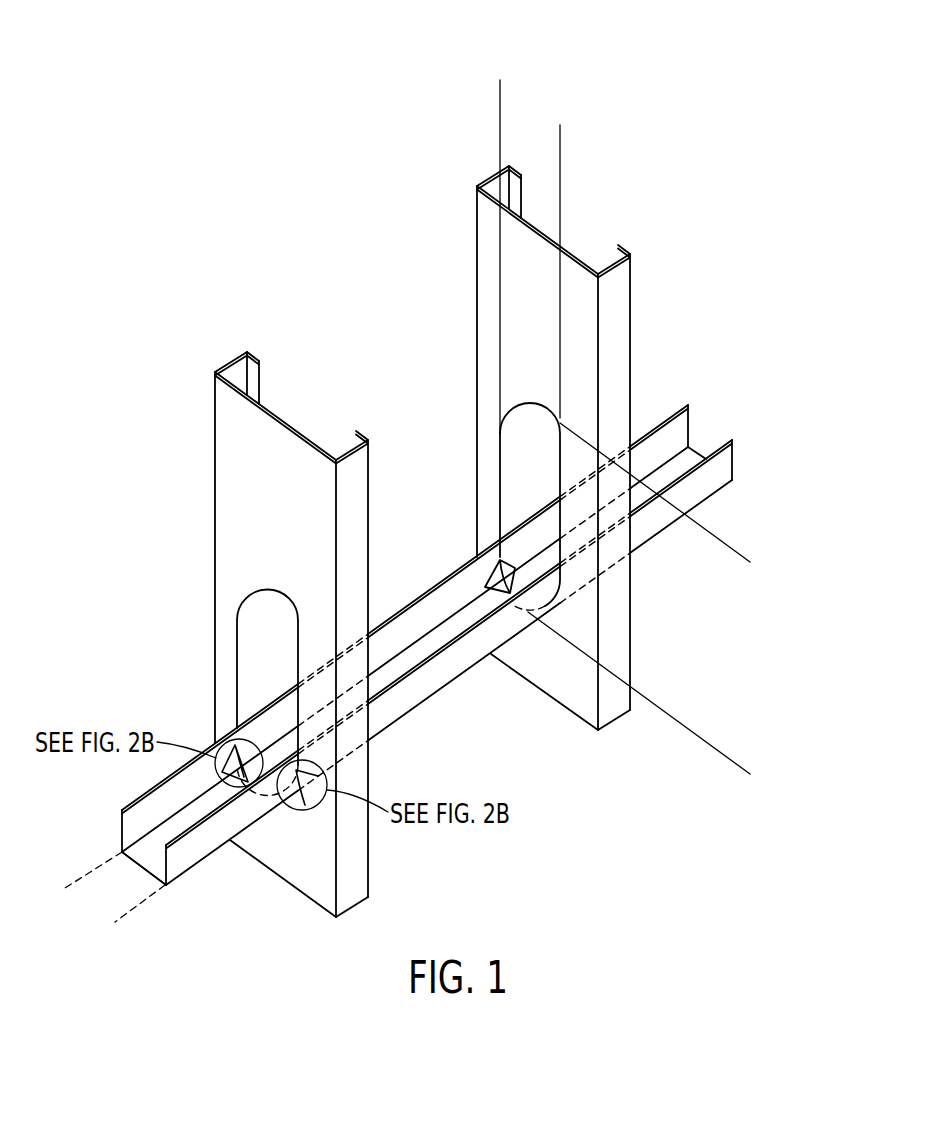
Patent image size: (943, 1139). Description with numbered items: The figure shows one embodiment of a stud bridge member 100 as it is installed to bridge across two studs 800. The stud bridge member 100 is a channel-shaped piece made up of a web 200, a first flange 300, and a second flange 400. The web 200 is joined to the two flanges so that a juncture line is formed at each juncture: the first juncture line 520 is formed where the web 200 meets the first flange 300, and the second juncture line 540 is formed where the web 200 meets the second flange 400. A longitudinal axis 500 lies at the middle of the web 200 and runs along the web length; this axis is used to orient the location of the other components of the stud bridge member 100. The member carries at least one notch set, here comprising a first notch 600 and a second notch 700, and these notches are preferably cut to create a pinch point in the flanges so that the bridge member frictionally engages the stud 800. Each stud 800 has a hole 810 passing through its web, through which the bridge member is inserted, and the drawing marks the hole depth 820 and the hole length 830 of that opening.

The stud bridge member 100 is at (482, 607).
The web 200 is at (712, 439).
The first flange 300 is at (700, 408).
The second flange 400 is at (748, 455).
The longitudinal axis 500 is at (138, 866).
The first juncture line 520 is at (87, 871).
The second juncture line 540 is at (135, 907).
The first notch 600 is at (238, 740).
The second notch 700 is at (298, 779).
The stud 800 is at (422, 541).
The hole passing through the web of the stud 810 is at (520, 469).
The hole depth 820 is at (560, 150).
The hole length 830 is at (727, 545).